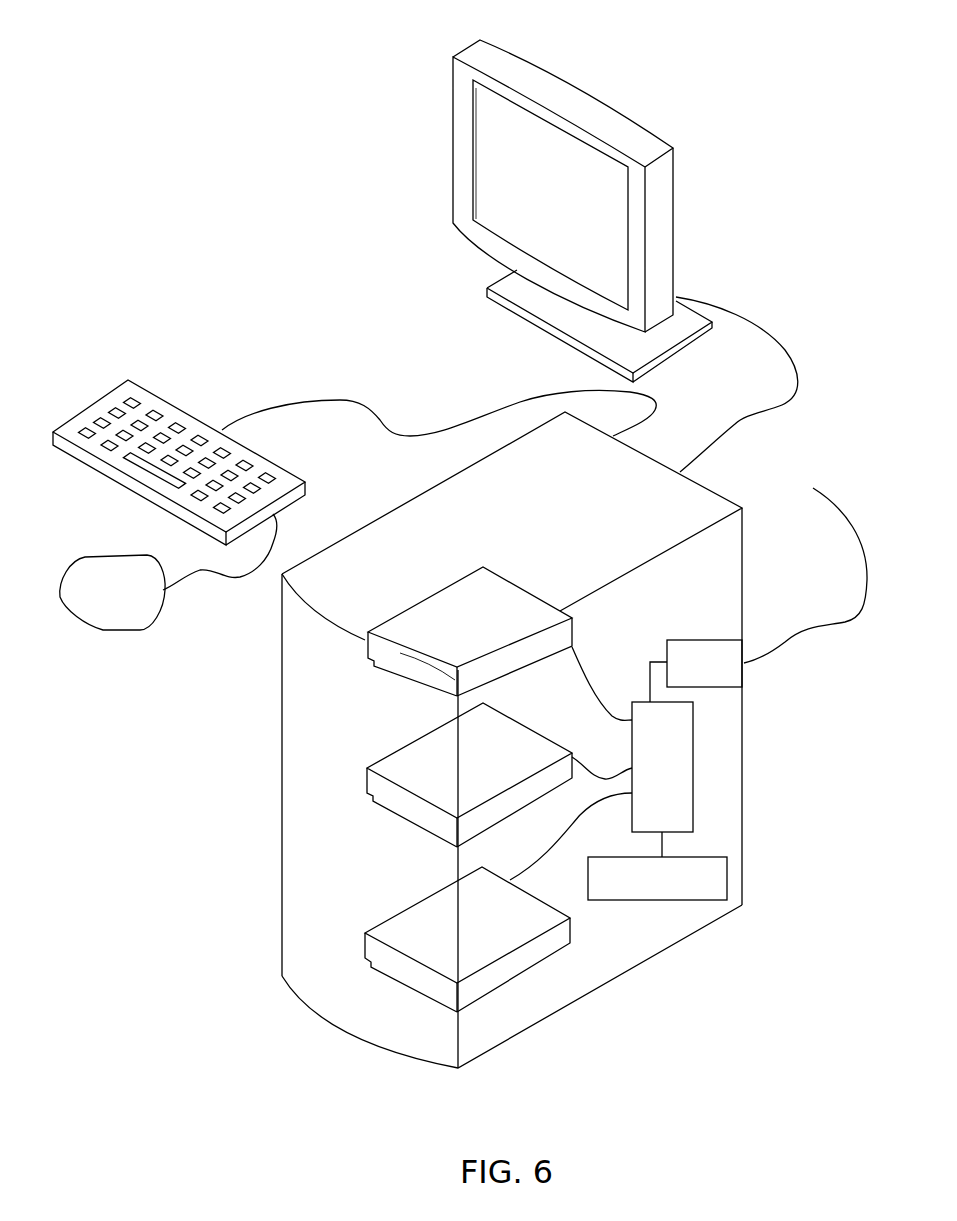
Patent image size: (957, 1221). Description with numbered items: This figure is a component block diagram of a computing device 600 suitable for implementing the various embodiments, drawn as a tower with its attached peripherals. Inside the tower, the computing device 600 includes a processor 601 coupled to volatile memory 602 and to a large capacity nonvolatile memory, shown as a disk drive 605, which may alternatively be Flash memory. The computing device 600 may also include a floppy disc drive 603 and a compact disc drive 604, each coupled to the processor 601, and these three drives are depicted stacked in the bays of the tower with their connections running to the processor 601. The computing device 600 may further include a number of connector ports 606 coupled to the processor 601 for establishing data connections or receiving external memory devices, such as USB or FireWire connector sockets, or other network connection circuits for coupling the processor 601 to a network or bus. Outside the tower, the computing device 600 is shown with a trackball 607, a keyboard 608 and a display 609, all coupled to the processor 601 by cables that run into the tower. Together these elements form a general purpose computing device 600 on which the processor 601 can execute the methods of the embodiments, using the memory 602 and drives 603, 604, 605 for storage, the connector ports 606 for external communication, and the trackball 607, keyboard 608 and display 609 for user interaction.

The computing device 600 is at (745, 536).
The processor 601 is at (680, 780).
The volatile memory 602 is at (678, 890).
The floppy disc drive 603 is at (573, 932).
The compact disc (CD) drive 604 is at (573, 640).
The disk drive 605 is at (520, 813).
The connector ports 606 is at (723, 675).
The trackball 607 is at (108, 633).
The keyboard 608 is at (306, 482).
The display 609 is at (676, 227).